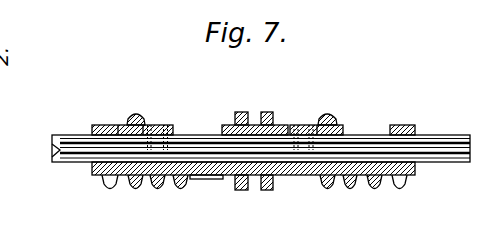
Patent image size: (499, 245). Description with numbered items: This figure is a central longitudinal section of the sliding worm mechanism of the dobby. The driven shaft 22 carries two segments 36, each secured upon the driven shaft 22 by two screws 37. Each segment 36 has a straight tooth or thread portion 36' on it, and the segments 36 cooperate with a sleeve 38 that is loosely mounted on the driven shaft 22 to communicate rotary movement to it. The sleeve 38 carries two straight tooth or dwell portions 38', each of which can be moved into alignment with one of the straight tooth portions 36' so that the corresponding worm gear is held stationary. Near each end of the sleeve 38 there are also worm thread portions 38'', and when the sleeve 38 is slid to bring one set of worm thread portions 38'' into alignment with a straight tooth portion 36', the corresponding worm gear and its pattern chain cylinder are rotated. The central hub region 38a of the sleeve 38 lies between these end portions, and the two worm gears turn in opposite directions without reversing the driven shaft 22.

The driven shaft 22 is at (447, 147).
The segment 36 is at (229, 114).
The straight tooth portion 36' is at (243, 101).
The screw 37 is at (152, 125).
The sleeve 38 is at (259, 152).
The central hub teeth 38a is at (257, 177).
The straight tooth or dwell portion 38' is at (253, 200).
The worm thread portion 38'' is at (253, 200).